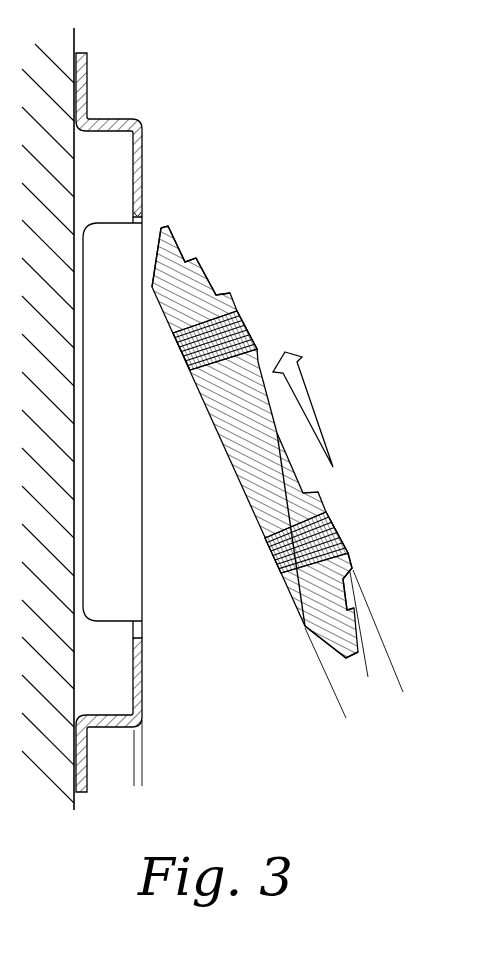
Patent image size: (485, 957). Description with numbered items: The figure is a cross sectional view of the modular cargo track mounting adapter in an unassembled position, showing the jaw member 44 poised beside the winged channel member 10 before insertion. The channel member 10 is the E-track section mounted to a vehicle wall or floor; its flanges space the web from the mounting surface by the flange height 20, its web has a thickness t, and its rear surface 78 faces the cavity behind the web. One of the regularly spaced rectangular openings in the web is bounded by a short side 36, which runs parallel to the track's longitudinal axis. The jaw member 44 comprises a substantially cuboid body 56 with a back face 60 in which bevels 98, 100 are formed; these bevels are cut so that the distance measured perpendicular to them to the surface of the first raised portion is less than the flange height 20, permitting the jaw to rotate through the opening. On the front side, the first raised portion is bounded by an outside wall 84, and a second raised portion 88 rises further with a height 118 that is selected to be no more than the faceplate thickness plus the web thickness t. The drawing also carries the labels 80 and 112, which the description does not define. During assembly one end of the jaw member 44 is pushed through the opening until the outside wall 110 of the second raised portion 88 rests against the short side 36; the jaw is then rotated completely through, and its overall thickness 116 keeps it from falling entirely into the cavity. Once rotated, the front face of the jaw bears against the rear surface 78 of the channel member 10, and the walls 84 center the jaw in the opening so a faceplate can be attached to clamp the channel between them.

The winged channel member 10 is at (134, 420).
The flange height 20 is at (133, 118).
The short side 36 is at (132, 218).
The jaw member 44 is at (334, 417).
The cuboid body 56 is at (291, 598).
The back face 60 is at (250, 437).
The rear surface 78 is at (133, 686).
The upper flange 80 is at (143, 166).
The outside wall 84 is at (188, 262).
The second raised portion 88 is at (257, 348).
The bevel 98 is at (157, 253).
The bevel 100 is at (315, 634).
The outside wall 110 is at (218, 290).
The second step 112 is at (347, 575).
The overall thickness 116 is at (398, 688).
The height of second raised portion 118 is at (366, 668).
The thickness of web t is at (103, 773).